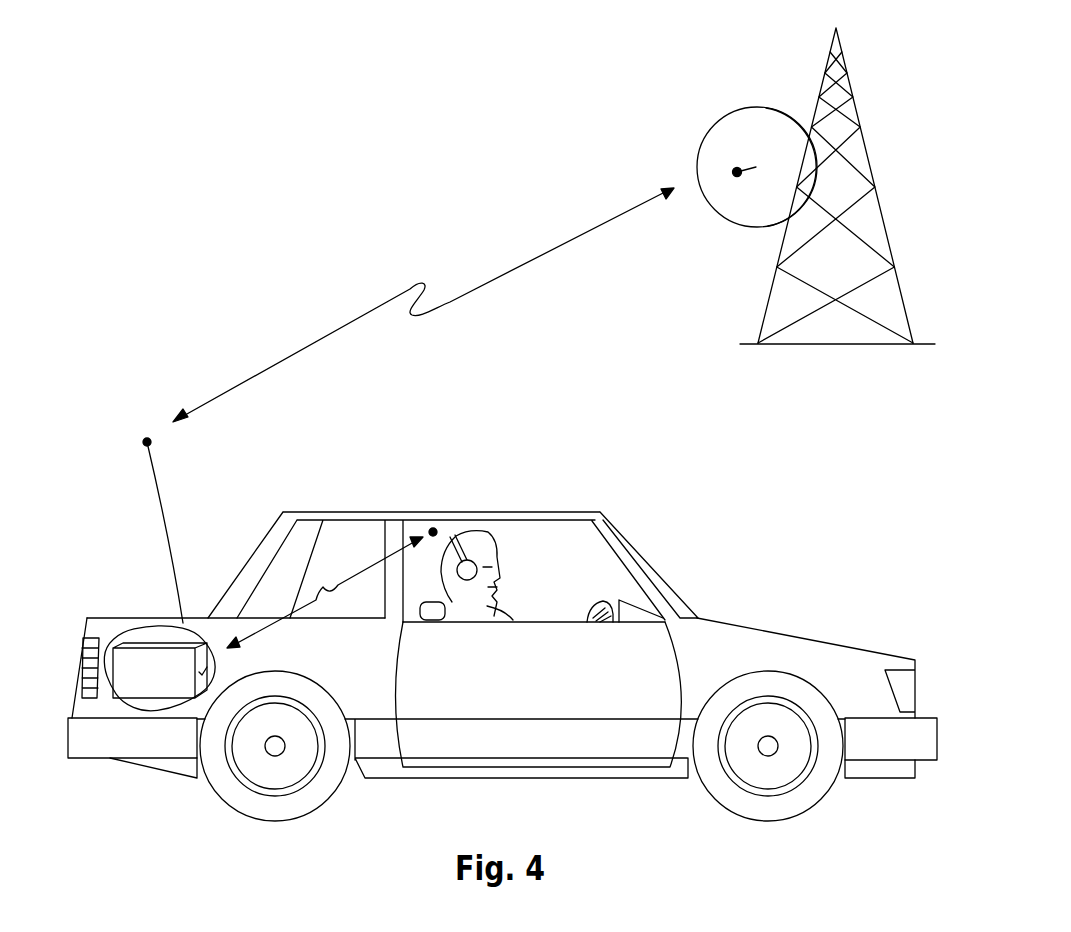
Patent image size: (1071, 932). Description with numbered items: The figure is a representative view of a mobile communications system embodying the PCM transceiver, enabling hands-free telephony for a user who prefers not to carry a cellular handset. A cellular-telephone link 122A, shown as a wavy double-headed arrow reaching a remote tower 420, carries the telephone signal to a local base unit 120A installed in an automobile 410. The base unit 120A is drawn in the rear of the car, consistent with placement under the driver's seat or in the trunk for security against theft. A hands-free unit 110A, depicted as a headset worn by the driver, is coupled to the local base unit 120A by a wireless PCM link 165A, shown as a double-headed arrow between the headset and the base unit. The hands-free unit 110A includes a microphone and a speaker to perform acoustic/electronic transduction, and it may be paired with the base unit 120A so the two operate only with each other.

The base station / cellular tower antenna 420 is at (757, 107).
The cellular-telephone link 122A is at (343, 325).
The vehicle 410 is at (812, 638).
The hands-free unit 110A is at (471, 563).
The wireless PCM link 165A is at (372, 566).
The local base unit 120A is at (183, 687).